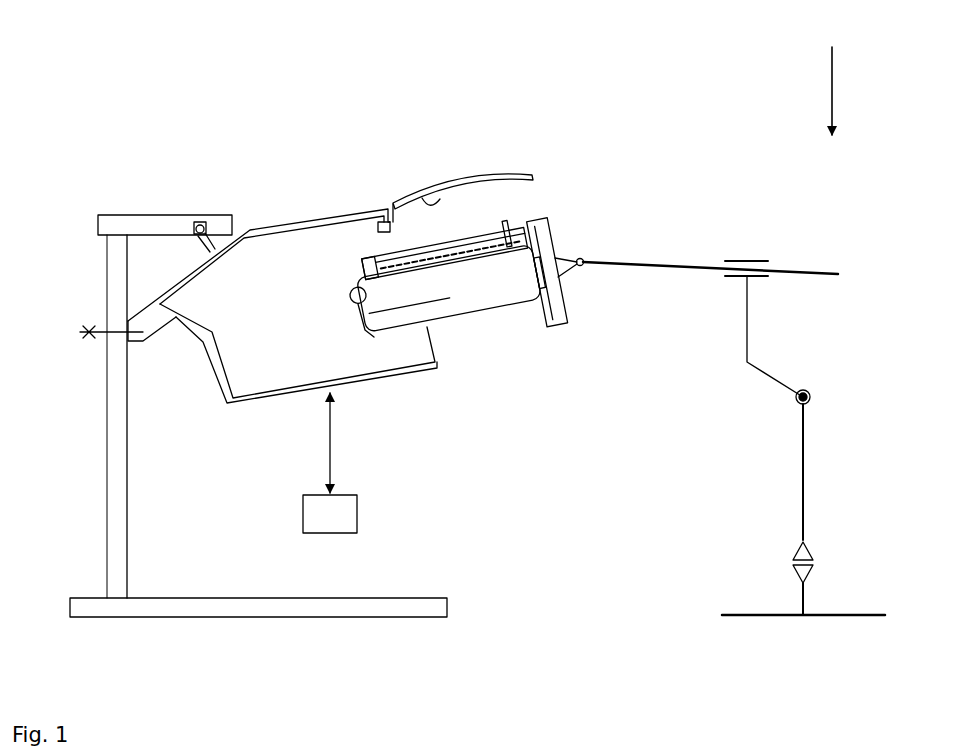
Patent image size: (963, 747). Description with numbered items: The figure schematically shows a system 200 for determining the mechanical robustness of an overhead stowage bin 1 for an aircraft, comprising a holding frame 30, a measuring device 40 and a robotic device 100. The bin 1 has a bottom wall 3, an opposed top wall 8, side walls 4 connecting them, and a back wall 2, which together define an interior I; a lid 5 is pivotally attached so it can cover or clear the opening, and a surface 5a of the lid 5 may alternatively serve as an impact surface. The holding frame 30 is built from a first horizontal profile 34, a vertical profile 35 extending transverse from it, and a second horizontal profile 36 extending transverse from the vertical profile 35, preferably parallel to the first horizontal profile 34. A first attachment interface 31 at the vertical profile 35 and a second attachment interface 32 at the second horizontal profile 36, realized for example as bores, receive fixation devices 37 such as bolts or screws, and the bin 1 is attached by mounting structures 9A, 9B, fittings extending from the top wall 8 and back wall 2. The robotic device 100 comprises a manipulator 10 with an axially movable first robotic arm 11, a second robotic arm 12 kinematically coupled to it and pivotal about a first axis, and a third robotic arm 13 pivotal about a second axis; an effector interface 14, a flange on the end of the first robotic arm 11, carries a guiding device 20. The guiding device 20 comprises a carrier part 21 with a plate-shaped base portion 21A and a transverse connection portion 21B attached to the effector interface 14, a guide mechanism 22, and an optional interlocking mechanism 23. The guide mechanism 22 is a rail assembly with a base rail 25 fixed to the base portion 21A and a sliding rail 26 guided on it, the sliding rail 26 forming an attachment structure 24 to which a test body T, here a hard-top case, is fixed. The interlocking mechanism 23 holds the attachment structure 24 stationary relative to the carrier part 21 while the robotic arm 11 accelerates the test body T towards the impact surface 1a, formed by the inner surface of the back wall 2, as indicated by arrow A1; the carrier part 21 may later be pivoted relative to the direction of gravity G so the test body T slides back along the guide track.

The overhead stowage bin 1 is at (326, 179).
The impact surface 1a is at (362, 326).
The back wall 2 is at (220, 386).
The bottom wall 3 is at (355, 388).
The side walls 4 is at (374, 353).
The lid 5 is at (450, 177).
The surface of the lid 5a is at (419, 200).
The top wall 8 is at (276, 227).
The mounting structure 9A is at (145, 300).
The mounting structure 9B is at (177, 230).
The manipulator 10 is at (744, 426).
The first robotic arm 11 is at (650, 262).
The second robotic arm 12 is at (748, 327).
The third robotic arm 13 is at (803, 485).
The effector interface 14 is at (576, 266).
The guiding device 20 is at (471, 252).
The carrier part 21 is at (541, 222).
The base portion 21A is at (417, 243).
The connection portion 21B is at (563, 297).
The guide mechanism 22 is at (466, 238).
The interlocking mechanism 23 is at (508, 214).
The attachment structure 24 is at (543, 315).
The base rail 25 is at (368, 257).
The sliding rail 26 is at (498, 256).
The holding frame 30 is at (243, 354).
The first attachment interface 31 is at (127, 338).
The second attachment interface 32 is at (198, 222).
The first horizontal profile 34 is at (355, 607).
The vertical profile 35 is at (115, 517).
The second horizontal profile 36 is at (142, 228).
The fixation devices 37 is at (113, 330).
The measuring device 40 is at (319, 525).
The robotic device 100 is at (745, 174).
The system 200 is at (615, 84).
The arrow A1 is at (308, 443).
The direction of gravity G is at (833, 85).
The interior I is at (256, 276).
The test body T is at (486, 306).